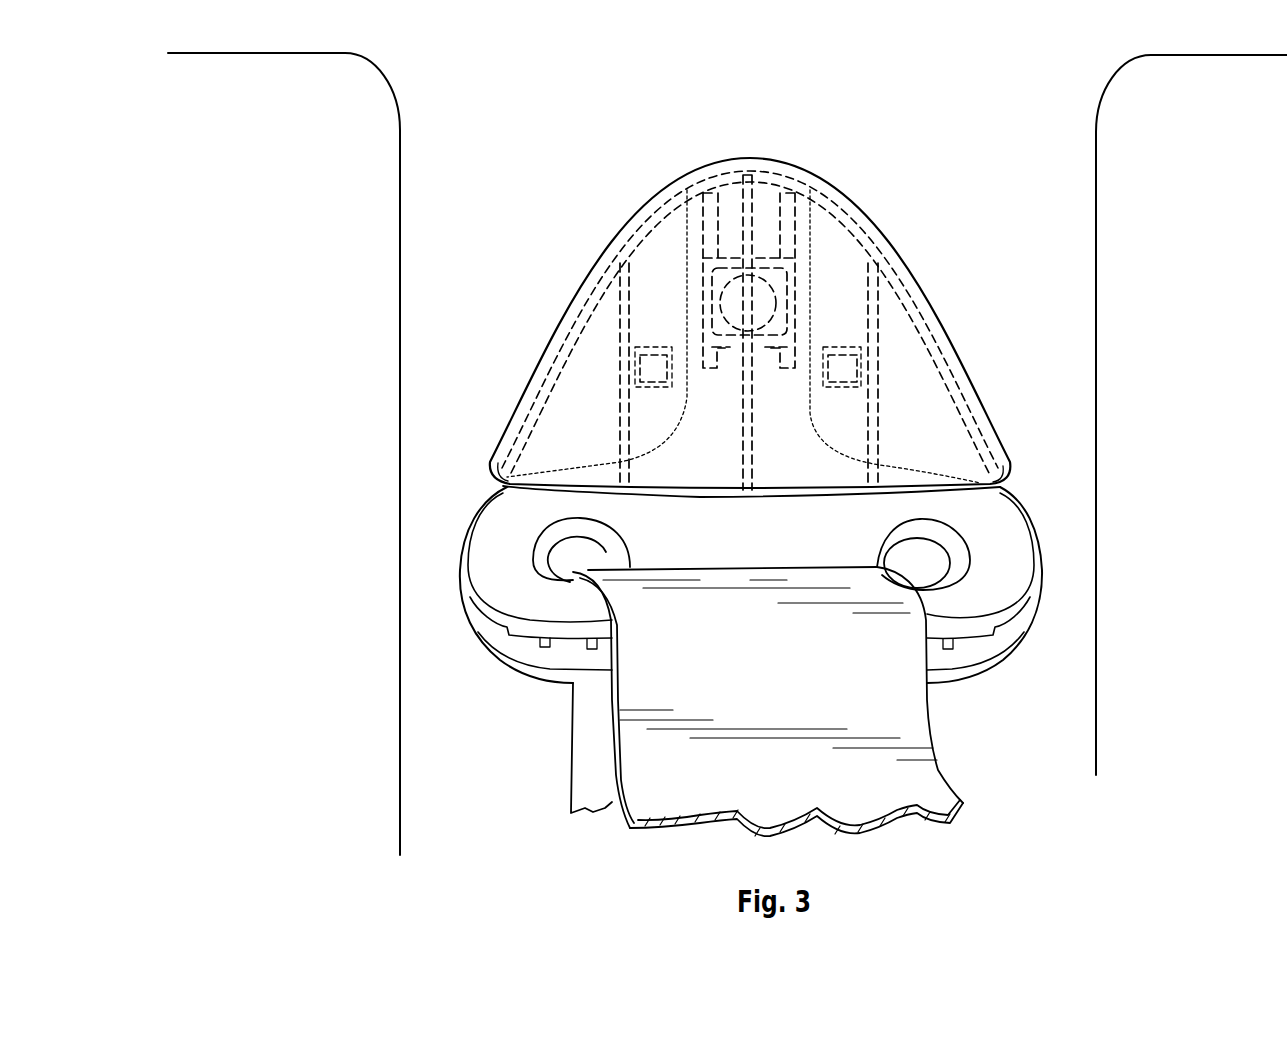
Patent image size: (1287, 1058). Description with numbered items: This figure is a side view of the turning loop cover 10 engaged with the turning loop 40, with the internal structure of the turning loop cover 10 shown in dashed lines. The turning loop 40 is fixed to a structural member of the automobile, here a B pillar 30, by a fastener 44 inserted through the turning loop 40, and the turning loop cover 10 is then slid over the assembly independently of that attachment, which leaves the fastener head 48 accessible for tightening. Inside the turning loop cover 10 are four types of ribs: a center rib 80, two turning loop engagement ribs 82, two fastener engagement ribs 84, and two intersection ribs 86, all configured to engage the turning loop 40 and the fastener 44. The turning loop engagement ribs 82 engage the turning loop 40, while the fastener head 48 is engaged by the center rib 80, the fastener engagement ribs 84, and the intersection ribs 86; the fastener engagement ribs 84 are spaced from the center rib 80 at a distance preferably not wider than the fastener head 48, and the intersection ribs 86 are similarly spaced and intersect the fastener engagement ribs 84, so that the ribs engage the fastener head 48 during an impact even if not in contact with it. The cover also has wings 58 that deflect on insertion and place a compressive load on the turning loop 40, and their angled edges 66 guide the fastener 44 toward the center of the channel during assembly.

The turning loop cover 10 is at (905, 240).
The B pillar 30 is at (1063, 208).
The turning loop 40 is at (1003, 553).
The fastener 44 is at (733, 262).
The fastener head 48 is at (764, 262).
The wings 58 is at (660, 423).
The angled edge 66 is at (585, 470).
The center rib 80 is at (757, 430).
The turning loop engagement ribs 82 is at (628, 297).
The fastener engagement ribs 84 is at (706, 216).
The intersection ribs 86 is at (725, 265).